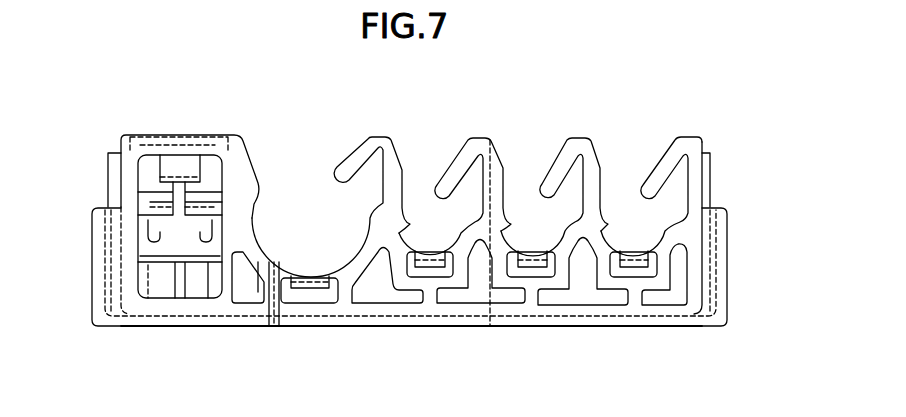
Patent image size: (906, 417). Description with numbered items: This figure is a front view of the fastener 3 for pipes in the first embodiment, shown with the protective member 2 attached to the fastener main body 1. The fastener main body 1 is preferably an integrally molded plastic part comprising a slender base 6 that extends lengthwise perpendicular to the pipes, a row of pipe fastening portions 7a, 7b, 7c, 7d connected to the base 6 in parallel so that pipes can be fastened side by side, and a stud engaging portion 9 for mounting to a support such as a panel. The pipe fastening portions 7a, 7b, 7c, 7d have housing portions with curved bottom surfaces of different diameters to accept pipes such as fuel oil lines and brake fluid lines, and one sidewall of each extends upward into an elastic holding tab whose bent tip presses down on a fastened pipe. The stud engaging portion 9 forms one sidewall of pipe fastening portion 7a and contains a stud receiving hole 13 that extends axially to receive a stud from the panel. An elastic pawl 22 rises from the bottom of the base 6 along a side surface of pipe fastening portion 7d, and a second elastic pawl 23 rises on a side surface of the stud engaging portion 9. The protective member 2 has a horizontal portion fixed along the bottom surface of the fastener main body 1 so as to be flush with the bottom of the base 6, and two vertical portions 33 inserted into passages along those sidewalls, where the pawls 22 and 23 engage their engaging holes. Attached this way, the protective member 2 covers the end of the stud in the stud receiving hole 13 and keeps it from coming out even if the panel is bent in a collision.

The fastener main body 1 is at (673, 137).
The protective member 2 is at (133, 321).
The fastener 3 is at (733, 129).
The base 6 is at (270, 318).
The pipe fastening portion 7a is at (312, 214).
The pipe fastening portion 7b is at (428, 214).
The pipe fastening portion 7c is at (530, 214).
The pipe fastening portion 7d is at (628, 214).
The stud engaging portion 9 is at (142, 150).
The stud receiving hole 13 is at (172, 240).
The elastic pawl 22 is at (730, 212).
The second elastic pawl 23 is at (93, 210).
The vertical portions 33 is at (113, 172).